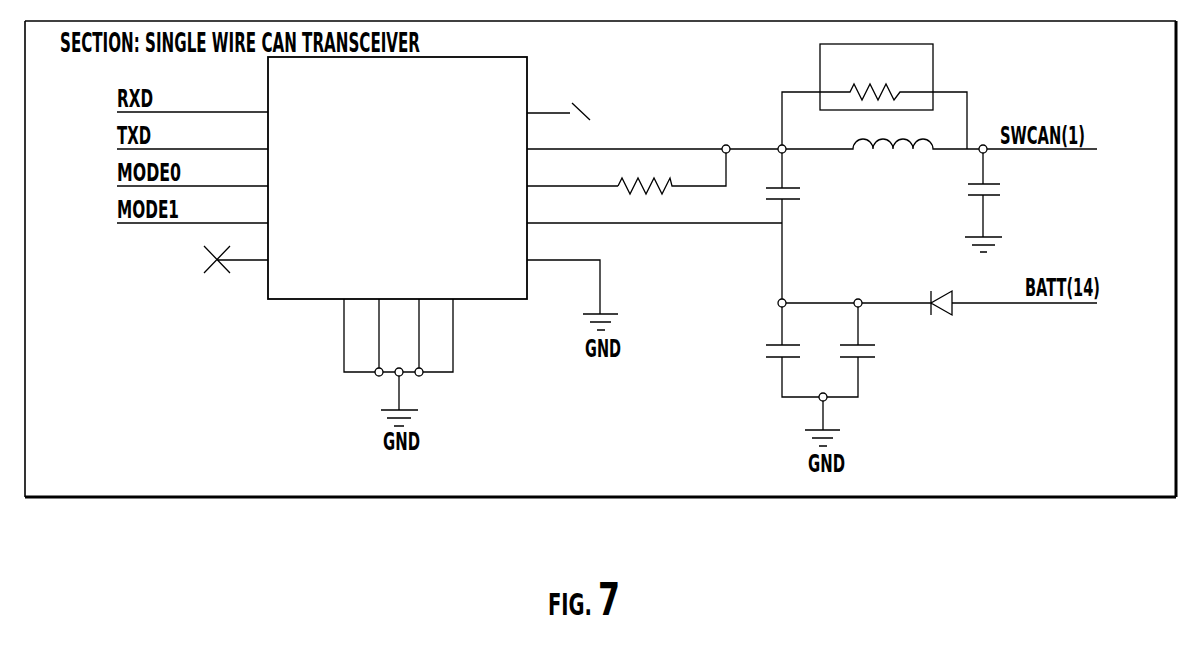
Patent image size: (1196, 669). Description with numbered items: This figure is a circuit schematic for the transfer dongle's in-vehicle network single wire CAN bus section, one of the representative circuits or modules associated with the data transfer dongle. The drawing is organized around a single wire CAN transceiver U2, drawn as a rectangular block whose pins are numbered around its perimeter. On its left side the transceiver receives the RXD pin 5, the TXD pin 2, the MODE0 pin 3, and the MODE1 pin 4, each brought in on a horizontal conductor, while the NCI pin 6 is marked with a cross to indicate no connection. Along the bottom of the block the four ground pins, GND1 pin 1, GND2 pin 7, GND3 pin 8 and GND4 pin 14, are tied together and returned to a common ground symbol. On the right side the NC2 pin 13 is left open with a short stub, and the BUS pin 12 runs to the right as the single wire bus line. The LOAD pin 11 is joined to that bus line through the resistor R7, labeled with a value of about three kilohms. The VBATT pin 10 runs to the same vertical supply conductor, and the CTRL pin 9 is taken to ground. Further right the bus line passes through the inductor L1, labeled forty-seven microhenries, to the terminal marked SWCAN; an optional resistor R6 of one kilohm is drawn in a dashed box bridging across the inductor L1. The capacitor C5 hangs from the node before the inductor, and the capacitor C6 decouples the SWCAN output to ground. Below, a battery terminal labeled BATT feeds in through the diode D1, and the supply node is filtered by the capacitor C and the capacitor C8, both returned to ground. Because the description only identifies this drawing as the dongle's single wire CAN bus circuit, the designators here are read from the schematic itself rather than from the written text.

The single wire CAN transceiver U2 is at (374, 177).
The resistor 3.01K R7 is at (672, 186).
The optional resistor 1K R6 is at (874, 96).
The inductor 47uH L1 is at (882, 128).
The capacitor 100 F C5 is at (800, 226).
The capacitor 47 F C6 is at (1003, 218).
The capacitor 0.1uF C is at (808, 352).
The capacitor 4.7uF C8 is at (873, 352).
The diode 145000 D1 is at (893, 303).
The GND1 pin / SWCAN bus 1 is at (700, 335).
The TXD pin 2 is at (192, 136).
The MODE0 pin 3 is at (192, 173).
The MODE1 pin 4 is at (192, 210).
The RXD pin 5 is at (192, 99).
The NCI pin 6 is at (236, 253).
The GND2 pin 7 is at (364, 335).
The GND3 pin 8 is at (404, 335).
The CTRL pin 9 is at (572, 282).
The VBATT pin 10 is at (654, 211).
The LOAD pin 11 is at (572, 174).
The BUS pin 12 is at (652, 137).
The NC2 pin 13 is at (558, 103).
The GND4 pin / battery 14 is at (436, 335).